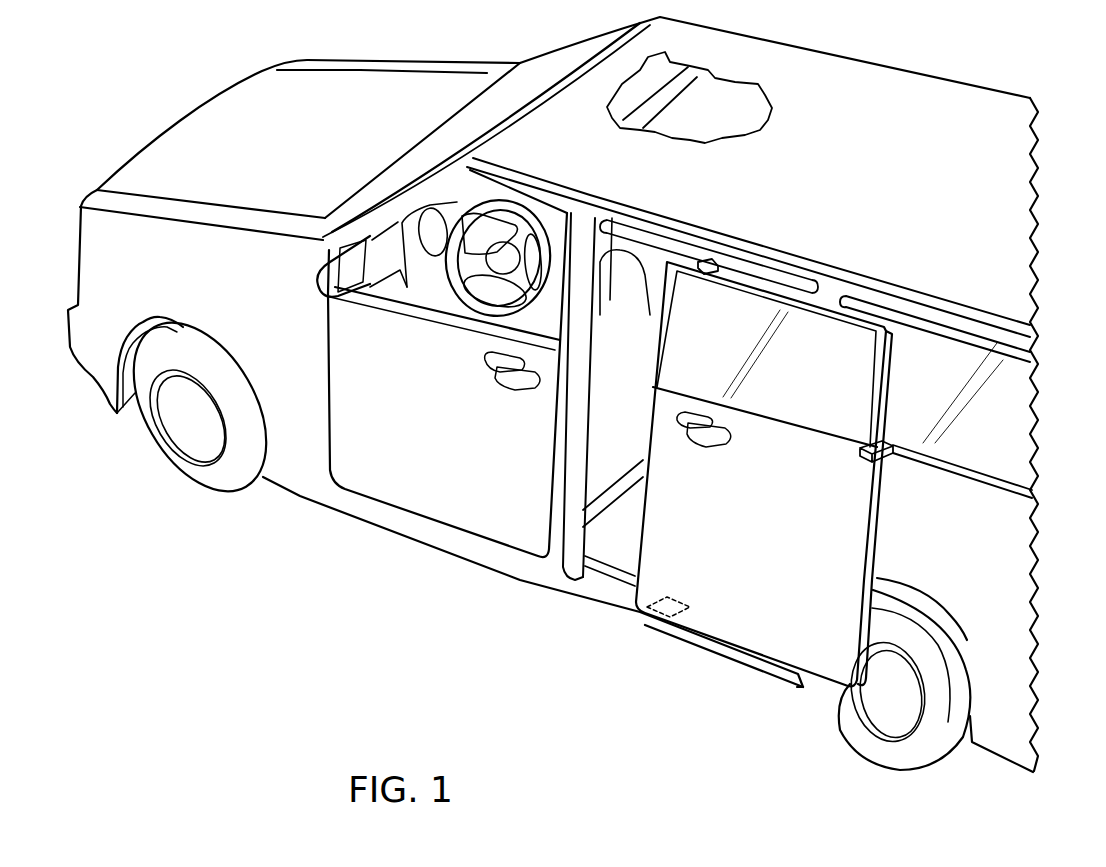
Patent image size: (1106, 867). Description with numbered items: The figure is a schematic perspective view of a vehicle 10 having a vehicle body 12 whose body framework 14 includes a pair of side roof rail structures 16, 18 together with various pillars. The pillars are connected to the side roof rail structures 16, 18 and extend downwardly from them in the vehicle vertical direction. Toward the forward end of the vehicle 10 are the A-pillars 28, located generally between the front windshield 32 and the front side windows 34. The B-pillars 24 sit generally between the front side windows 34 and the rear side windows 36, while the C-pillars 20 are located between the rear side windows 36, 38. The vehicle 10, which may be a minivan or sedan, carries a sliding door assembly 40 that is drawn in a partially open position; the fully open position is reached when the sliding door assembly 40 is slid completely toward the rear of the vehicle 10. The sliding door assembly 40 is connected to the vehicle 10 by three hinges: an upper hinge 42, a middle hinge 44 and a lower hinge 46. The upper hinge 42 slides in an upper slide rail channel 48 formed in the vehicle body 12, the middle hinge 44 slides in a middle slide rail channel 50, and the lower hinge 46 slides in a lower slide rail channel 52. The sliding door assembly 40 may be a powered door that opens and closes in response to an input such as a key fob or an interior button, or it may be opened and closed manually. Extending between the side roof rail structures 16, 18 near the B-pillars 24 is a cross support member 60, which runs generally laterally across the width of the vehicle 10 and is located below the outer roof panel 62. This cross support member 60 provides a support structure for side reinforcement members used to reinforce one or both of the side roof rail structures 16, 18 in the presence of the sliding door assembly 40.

The vehicle 10 is at (1016, 192).
The vehicle body 12 is at (270, 509).
The body framework 14 is at (553, 472).
The side roof rail structure 16 is at (536, 183).
The side roof rail structure 18 is at (970, 88).
The C-pillar 20 is at (827, 302).
The B-pillar 24 is at (606, 218).
The A-pillar 28 is at (385, 210).
The front windshield 32 is at (452, 125).
The front side window 34 is at (423, 294).
The rear side window 36 is at (860, 365).
The rear side window 38 is at (962, 385).
The sliding door assembly 40 is at (898, 557).
The upper hinge 42 is at (710, 257).
The middle hinge 44 is at (880, 457).
The lower hinge 46 is at (653, 615).
The upper slide rail channel 48 is at (683, 247).
The middle slide rail channel 50 is at (988, 472).
The lower slide rail channel 52 is at (603, 577).
The cross support member 60 is at (688, 97).
The outer roof panel 62 is at (852, 100).